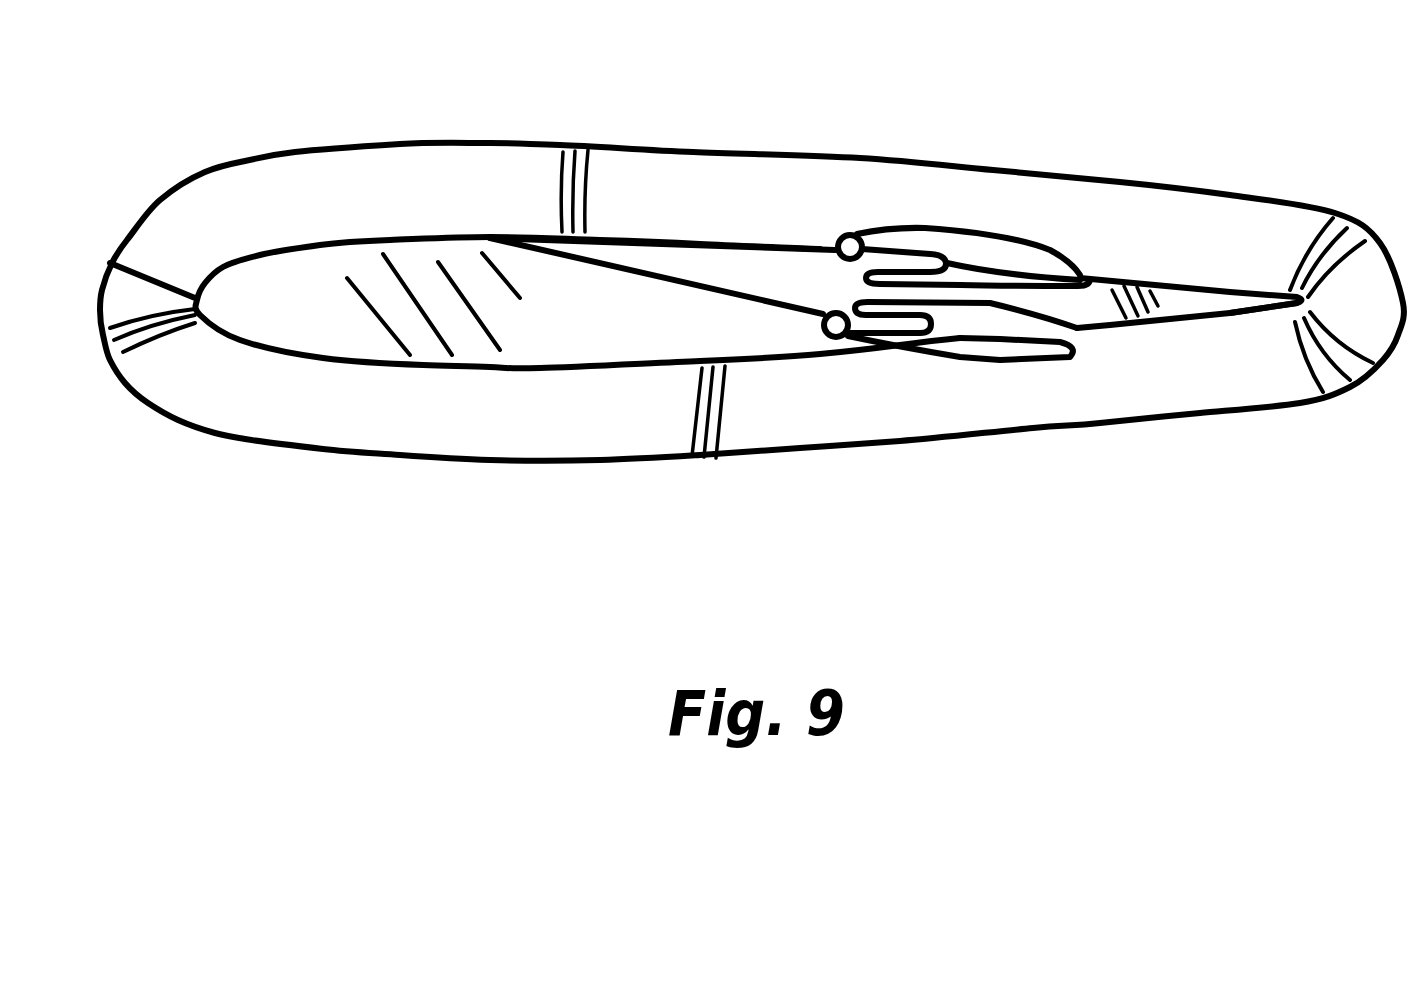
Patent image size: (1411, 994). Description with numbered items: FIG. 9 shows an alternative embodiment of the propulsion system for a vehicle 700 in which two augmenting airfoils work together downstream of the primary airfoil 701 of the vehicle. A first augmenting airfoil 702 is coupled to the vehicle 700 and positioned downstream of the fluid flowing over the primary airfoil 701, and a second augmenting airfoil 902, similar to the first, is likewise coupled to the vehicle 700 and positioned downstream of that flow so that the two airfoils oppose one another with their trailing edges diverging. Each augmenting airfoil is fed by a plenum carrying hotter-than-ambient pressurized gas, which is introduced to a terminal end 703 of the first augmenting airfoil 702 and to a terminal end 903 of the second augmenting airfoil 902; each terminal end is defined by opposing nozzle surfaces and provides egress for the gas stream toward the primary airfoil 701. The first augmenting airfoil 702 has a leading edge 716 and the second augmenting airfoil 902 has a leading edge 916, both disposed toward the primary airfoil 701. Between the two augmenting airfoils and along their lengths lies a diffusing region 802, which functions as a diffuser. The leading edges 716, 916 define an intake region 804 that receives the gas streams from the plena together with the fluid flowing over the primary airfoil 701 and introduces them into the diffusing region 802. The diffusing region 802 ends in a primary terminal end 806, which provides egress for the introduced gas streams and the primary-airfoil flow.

The vehicle 700 is at (395, 196).
The primary airfoil 701 is at (322, 320).
The first augmenting airfoil 702 is at (1030, 247).
The terminal end 703 is at (858, 226).
The leading edge 716 is at (800, 237).
The diffusing region 802 is at (1058, 302).
The intake region 804 is at (802, 285).
The primary terminal end 806 is at (1114, 320).
The second augmenting airfoil 902 is at (1006, 362).
The terminal end 903 is at (851, 328).
The leading edge 916 is at (800, 315).